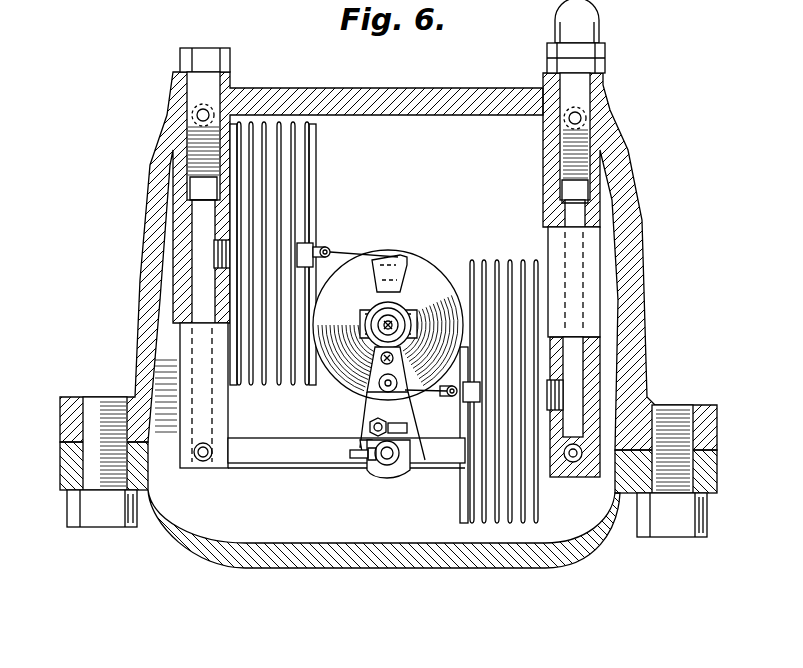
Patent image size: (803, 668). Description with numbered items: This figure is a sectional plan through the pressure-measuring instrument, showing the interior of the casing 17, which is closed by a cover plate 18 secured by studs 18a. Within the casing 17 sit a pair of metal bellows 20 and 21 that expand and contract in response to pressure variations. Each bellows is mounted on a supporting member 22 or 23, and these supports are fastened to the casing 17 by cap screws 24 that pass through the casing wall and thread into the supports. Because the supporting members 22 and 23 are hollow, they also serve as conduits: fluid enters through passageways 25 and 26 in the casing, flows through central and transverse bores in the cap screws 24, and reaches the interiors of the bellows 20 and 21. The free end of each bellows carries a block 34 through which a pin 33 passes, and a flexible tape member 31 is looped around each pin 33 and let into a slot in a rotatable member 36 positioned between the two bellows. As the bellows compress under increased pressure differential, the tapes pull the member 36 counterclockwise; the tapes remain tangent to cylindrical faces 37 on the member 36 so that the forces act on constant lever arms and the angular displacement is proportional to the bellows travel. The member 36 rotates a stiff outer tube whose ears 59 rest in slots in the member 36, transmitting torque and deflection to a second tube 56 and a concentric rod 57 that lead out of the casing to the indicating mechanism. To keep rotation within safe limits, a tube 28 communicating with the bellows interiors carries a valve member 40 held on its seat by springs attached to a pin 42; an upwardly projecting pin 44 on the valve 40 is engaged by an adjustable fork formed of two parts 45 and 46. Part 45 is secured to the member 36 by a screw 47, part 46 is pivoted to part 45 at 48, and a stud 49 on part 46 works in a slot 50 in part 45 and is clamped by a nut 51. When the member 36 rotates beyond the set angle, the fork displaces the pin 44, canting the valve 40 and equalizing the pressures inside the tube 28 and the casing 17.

The casing 17 is at (635, 310).
The cover plate 18 is at (230, 543).
The studs 18a is at (77, 512).
The bellows 20 is at (300, 198).
The bellows 21 is at (477, 258).
The supporting member 22 is at (215, 413).
The supporting member 23 is at (560, 215).
The cap screws 24 is at (208, 60).
The passageway 25 is at (183, 115).
The passageway 26 is at (595, 103).
The tube 28 is at (288, 452).
The flexible tape member 31 is at (366, 258).
The pin 33 is at (327, 249).
The block 34 is at (320, 243).
The rotatable member 36 is at (400, 270).
The cylindrical faces 37 is at (376, 263).
The valve member 40 is at (388, 468).
The pin 42 is at (350, 460).
The projecting pin 44 is at (403, 468).
The fork part 45 is at (373, 407).
The fork part 46 is at (368, 462).
The screw 47 is at (337, 382).
The pivot 48 is at (347, 390).
The stud 49 is at (370, 427).
The slot 50 is at (407, 428).
The nut 51 is at (362, 440).
The second tube 56 is at (367, 303).
The rod 57 is at (378, 320).
The ears 59 is at (412, 318).